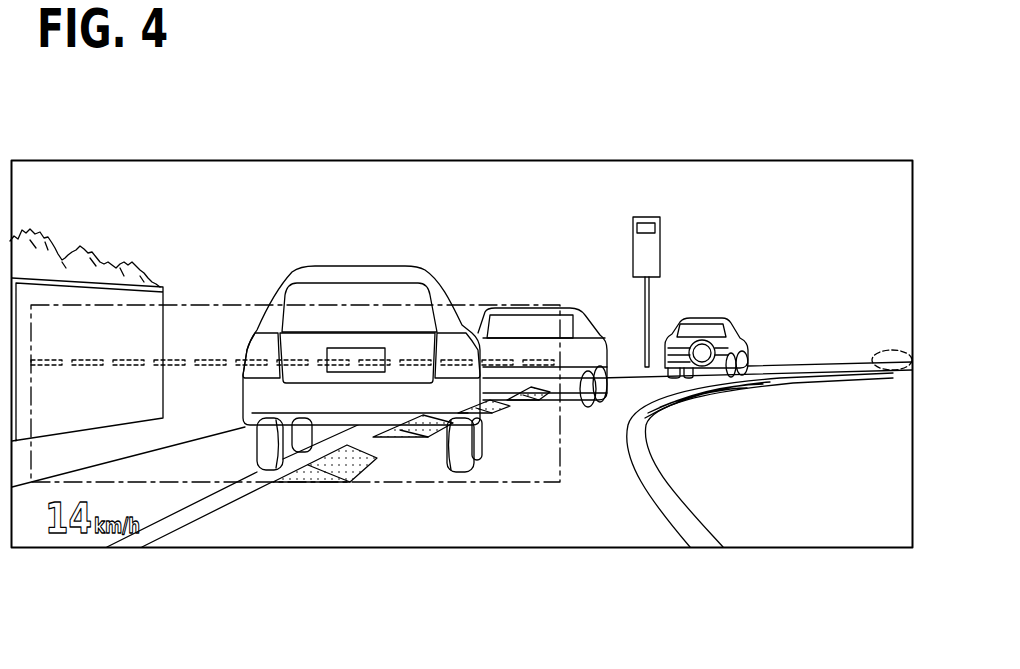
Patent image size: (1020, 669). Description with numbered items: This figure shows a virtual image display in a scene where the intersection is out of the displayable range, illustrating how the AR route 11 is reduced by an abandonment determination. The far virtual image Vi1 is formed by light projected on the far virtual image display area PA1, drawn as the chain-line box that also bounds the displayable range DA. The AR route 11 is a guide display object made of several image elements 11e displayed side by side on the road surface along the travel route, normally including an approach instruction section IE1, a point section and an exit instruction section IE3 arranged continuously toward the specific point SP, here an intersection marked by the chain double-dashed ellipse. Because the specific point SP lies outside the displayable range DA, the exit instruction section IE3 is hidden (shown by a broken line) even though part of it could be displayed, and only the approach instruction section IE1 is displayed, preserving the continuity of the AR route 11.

The exit instruction section IE3 is at (185, 343).
The far virtual image Vi1 is at (502, 274).
The AR route 11 is at (543, 375).
The approach instruction section IE1 is at (320, 532).
The image element 11e is at (294, 499).
The far virtual image display area PA1 is at (331, 462).
The displayable range DA is at (560, 482).
The specific point SP is at (878, 372).